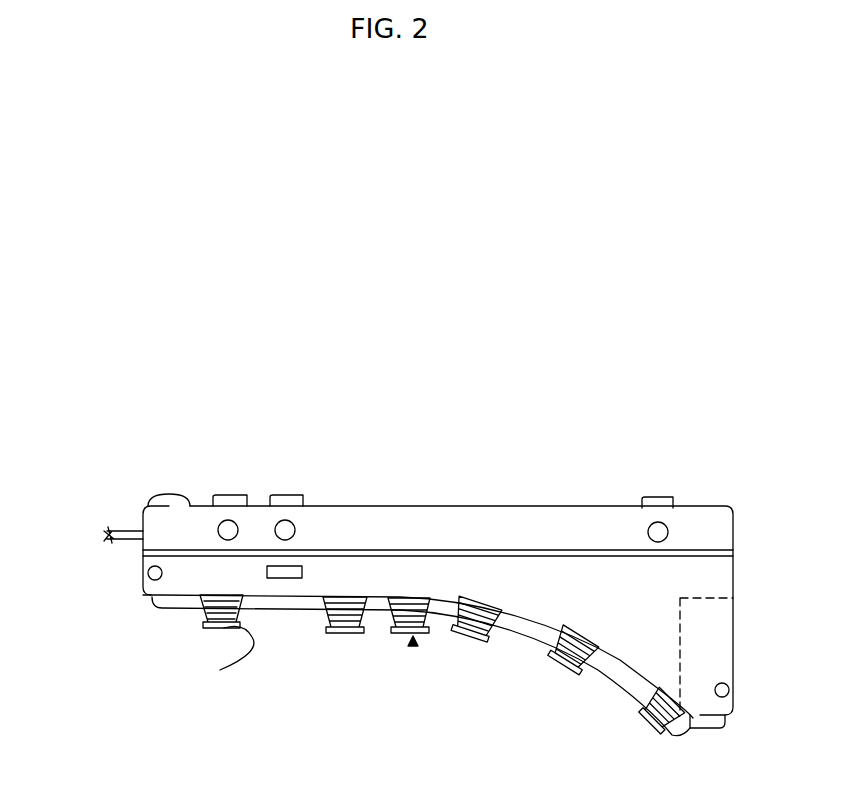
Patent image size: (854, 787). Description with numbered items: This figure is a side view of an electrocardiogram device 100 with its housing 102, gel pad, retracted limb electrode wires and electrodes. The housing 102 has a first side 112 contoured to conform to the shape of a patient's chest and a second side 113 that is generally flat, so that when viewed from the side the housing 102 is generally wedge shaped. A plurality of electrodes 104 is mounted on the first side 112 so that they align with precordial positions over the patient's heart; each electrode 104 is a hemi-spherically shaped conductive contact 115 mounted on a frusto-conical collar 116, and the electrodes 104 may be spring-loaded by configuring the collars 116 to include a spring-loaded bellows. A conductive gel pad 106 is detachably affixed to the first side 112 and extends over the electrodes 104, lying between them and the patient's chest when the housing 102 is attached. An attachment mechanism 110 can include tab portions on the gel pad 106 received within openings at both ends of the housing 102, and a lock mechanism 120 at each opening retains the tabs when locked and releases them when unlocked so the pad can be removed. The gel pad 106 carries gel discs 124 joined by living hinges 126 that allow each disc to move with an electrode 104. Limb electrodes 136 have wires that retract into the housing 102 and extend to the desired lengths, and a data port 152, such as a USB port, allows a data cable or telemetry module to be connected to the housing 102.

The electrocardiogram device 100 is at (418, 560).
The housing 102 is at (141, 503).
The electrodes 104 is at (415, 647).
The conductive gel pad 106 is at (160, 606).
The attachment mechanism 110 is at (106, 536).
The first side 112 is at (277, 600).
The second side 113 is at (460, 505).
The conductive contacts 115 is at (229, 662).
The collars 116 is at (212, 598).
The lock mechanism 120 is at (147, 573).
The gel disc 124 is at (592, 680).
The living hinge 126 is at (536, 640).
The limb electrodes 136 is at (285, 528).
The data port 152 is at (299, 579).